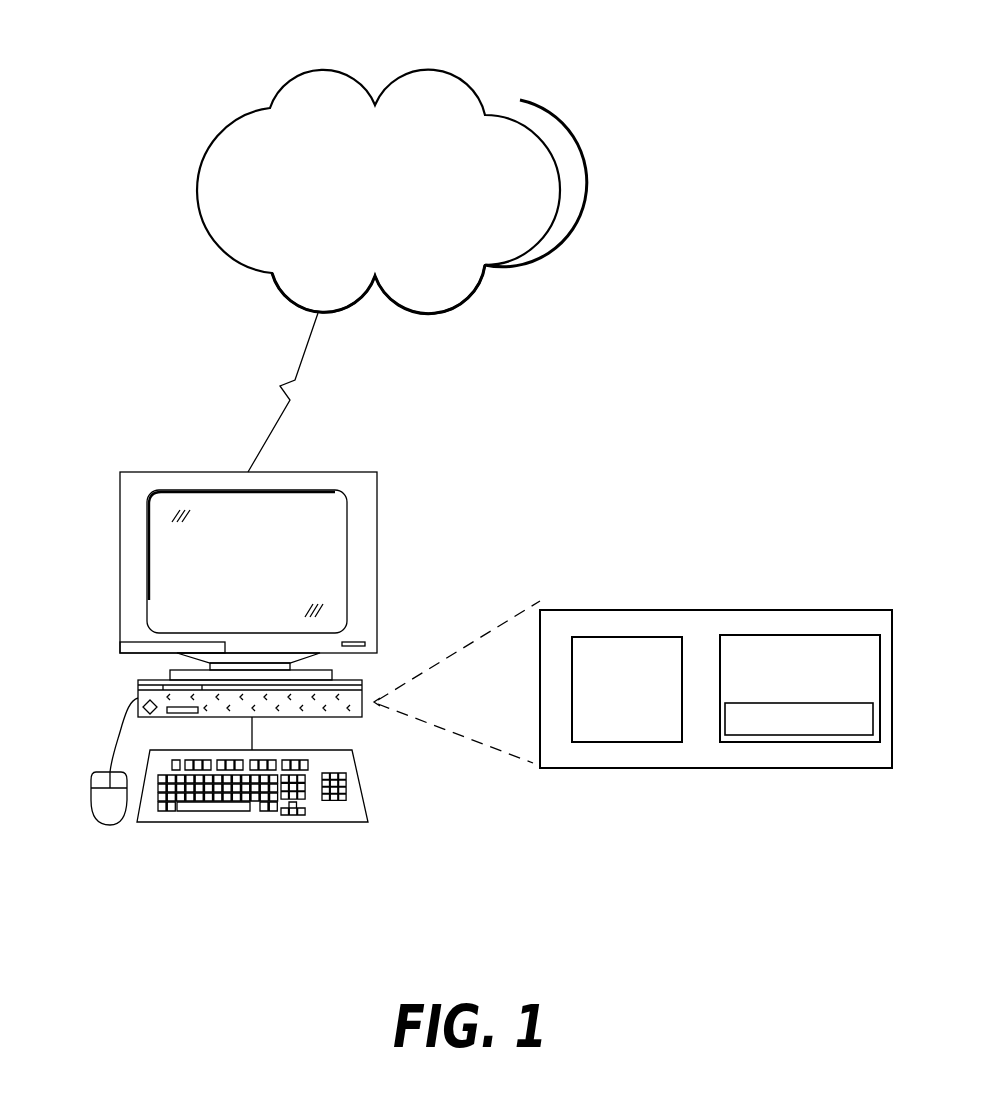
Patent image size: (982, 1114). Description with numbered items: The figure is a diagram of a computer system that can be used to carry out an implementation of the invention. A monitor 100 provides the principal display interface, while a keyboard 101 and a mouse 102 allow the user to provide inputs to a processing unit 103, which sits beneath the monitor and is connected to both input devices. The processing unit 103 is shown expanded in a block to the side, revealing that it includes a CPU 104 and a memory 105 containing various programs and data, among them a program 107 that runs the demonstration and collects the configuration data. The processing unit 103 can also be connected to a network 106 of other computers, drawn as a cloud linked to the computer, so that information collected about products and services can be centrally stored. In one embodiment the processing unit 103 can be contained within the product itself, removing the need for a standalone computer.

The monitor 100 is at (377, 500).
The keyboard 101 is at (368, 803).
The mouse 102 is at (113, 825).
The processing unit 103 is at (138, 682).
The CPU 104 is at (617, 637).
The memory 105 is at (793, 635).
The network 106 is at (467, 87).
The program 107 is at (758, 735).